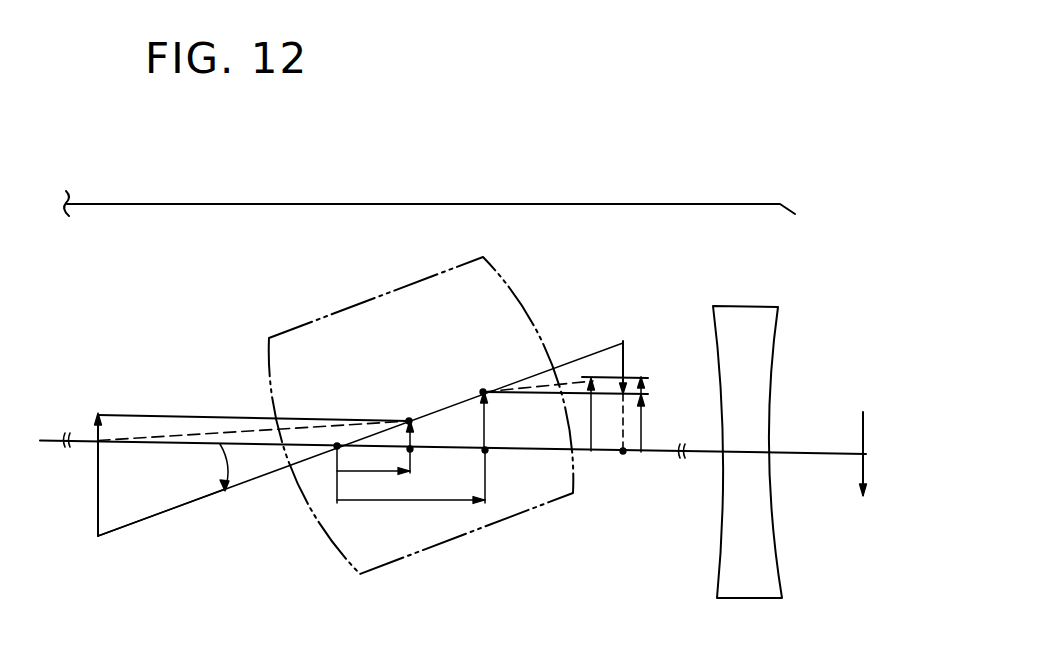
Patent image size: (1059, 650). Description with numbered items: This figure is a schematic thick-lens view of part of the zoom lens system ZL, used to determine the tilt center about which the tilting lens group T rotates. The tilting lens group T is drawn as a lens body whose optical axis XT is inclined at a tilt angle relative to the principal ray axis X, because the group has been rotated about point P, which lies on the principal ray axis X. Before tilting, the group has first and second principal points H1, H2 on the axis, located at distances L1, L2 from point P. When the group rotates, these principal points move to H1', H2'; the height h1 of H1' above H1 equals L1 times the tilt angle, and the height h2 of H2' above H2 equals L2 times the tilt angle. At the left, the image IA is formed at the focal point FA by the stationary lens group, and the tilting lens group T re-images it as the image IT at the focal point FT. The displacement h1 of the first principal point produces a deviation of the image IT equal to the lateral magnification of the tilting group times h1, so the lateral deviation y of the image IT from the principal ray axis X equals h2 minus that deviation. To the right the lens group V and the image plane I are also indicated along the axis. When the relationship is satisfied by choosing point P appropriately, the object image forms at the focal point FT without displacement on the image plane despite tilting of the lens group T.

The zoom lens system ZL is at (429, 195).
The tilting lens group T is at (380, 556).
The variator lens unit V is at (756, 585).
The focal point FA is at (97, 447).
The image IA is at (100, 507).
The tilt center point P is at (337, 444).
The first principal point H1 is at (434, 463).
The displaced first principal point H1' is at (402, 392).
The height of first principal point displacement h1 is at (414, 446).
The distance from tilt center to first principal point L1 is at (373, 464).
The distance from tilt center to second principal point L2 is at (411, 491).
The second principal point H2 is at (506, 475).
The displaced second principal point H2' is at (487, 396).
The optical axis of tilting lens group XT is at (560, 362).
The image formed by tilting lens group IT is at (625, 358).
The lateral deviation of image y is at (597, 414).
The height of second principal point displacement h2 is at (643, 433).
The focal point of tilting lens group FT is at (626, 456).
The principal ray axis X is at (807, 455).
The image plane I is at (862, 458).